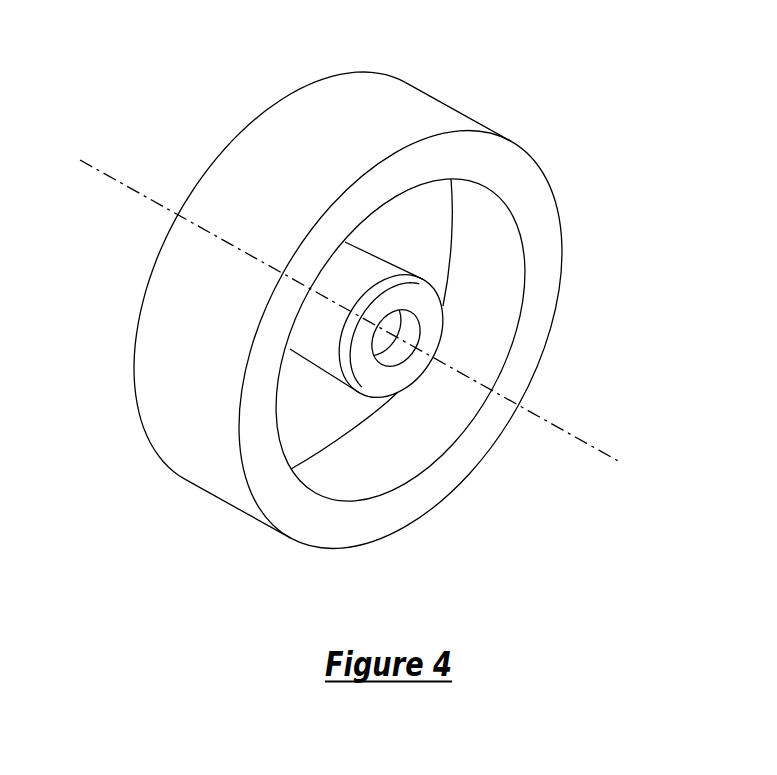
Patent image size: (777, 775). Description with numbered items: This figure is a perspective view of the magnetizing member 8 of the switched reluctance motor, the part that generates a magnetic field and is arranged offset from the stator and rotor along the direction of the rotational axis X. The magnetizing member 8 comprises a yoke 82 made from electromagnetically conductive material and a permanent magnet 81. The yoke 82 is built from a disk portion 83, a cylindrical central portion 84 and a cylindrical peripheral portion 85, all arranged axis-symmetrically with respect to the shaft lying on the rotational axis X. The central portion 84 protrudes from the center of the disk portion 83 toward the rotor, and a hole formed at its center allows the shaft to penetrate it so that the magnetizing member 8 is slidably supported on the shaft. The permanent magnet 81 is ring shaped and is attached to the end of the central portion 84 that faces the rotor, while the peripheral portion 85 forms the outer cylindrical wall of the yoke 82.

The magnetizing member 8 is at (579, 100).
The permanent magnet 81 is at (402, 368).
The yoke 82 is at (373, 527).
The disk portion 83 is at (313, 424).
The cylindrical central portion 84 is at (378, 258).
The cylindrical peripheral portion 85 is at (456, 466).
The rotational axis X is at (593, 446).